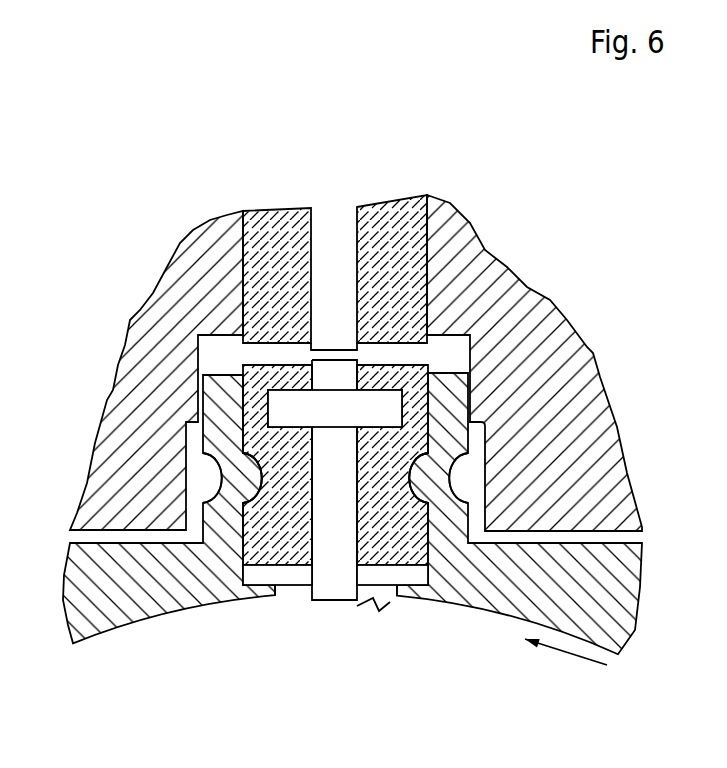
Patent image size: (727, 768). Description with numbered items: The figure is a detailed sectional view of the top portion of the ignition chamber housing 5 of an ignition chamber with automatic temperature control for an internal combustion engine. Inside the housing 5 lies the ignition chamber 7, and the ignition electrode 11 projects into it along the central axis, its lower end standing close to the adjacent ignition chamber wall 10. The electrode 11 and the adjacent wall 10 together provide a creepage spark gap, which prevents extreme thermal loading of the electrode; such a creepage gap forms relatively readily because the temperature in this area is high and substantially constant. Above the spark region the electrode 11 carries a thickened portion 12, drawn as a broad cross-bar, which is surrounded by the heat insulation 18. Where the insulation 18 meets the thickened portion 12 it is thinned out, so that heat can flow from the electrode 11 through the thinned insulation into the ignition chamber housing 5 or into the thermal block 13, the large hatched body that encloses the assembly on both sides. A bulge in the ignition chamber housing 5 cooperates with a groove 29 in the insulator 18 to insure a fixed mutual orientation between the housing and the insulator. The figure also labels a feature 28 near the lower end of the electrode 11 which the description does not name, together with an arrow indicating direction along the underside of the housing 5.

The ignition chamber housing 5 is at (150, 595).
The ignition chamber 7 is at (230, 753).
The ignition chamber wall 10 is at (242, 603).
The ignition electrode 11 is at (330, 576).
The thickened portion of the electrode 12 is at (385, 413).
The thermal block 13 is at (549, 401).
The heat insulation 18 is at (276, 369).
The gap 28 is at (390, 602).
The groove 29 is at (255, 480).